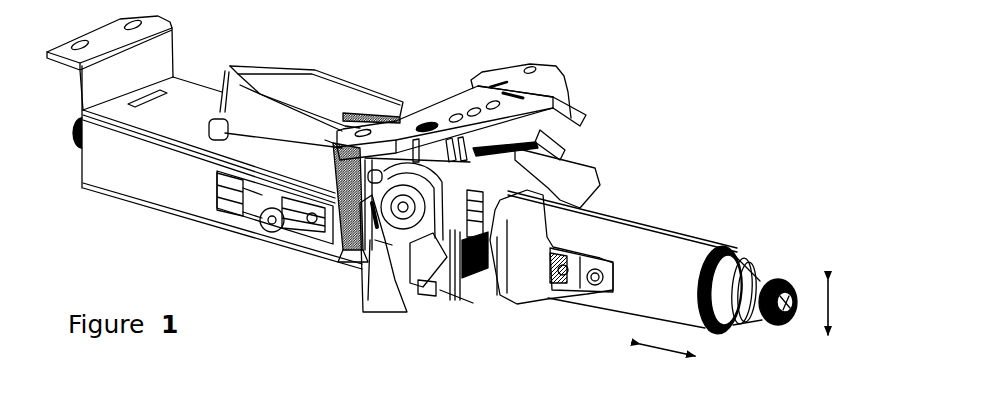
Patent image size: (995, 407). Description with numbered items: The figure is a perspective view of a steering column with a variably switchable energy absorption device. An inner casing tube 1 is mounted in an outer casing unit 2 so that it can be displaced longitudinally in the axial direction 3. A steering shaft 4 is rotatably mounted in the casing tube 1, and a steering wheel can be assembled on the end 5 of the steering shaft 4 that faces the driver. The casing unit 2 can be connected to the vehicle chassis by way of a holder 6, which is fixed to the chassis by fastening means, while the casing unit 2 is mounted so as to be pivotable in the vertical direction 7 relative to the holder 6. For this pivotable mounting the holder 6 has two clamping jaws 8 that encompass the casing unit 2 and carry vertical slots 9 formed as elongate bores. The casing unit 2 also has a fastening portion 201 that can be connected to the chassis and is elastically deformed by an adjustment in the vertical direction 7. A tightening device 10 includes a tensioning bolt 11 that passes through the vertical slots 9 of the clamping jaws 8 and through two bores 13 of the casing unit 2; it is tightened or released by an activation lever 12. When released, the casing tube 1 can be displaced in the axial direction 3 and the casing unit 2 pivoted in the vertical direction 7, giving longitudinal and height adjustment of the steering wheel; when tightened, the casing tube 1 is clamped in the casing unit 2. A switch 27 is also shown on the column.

The casing tube 1 is at (663, 220).
The casing unit 2 is at (163, 215).
The axial direction 3 is at (670, 350).
The steering shaft 4 is at (765, 265).
The end 5 is at (783, 276).
The holder 6 is at (543, 77).
The vertical direction 7 is at (833, 302).
The clamping jaws 8 is at (560, 143).
The vertical slots 9 is at (573, 123).
The tightening device 10 is at (463, 287).
The tensioning bolt 11 is at (340, 257).
The activation lever 12 is at (377, 293).
The bores 13 is at (525, 175).
The switch 27 is at (263, 247).
The fastening portion 201 is at (158, 57).